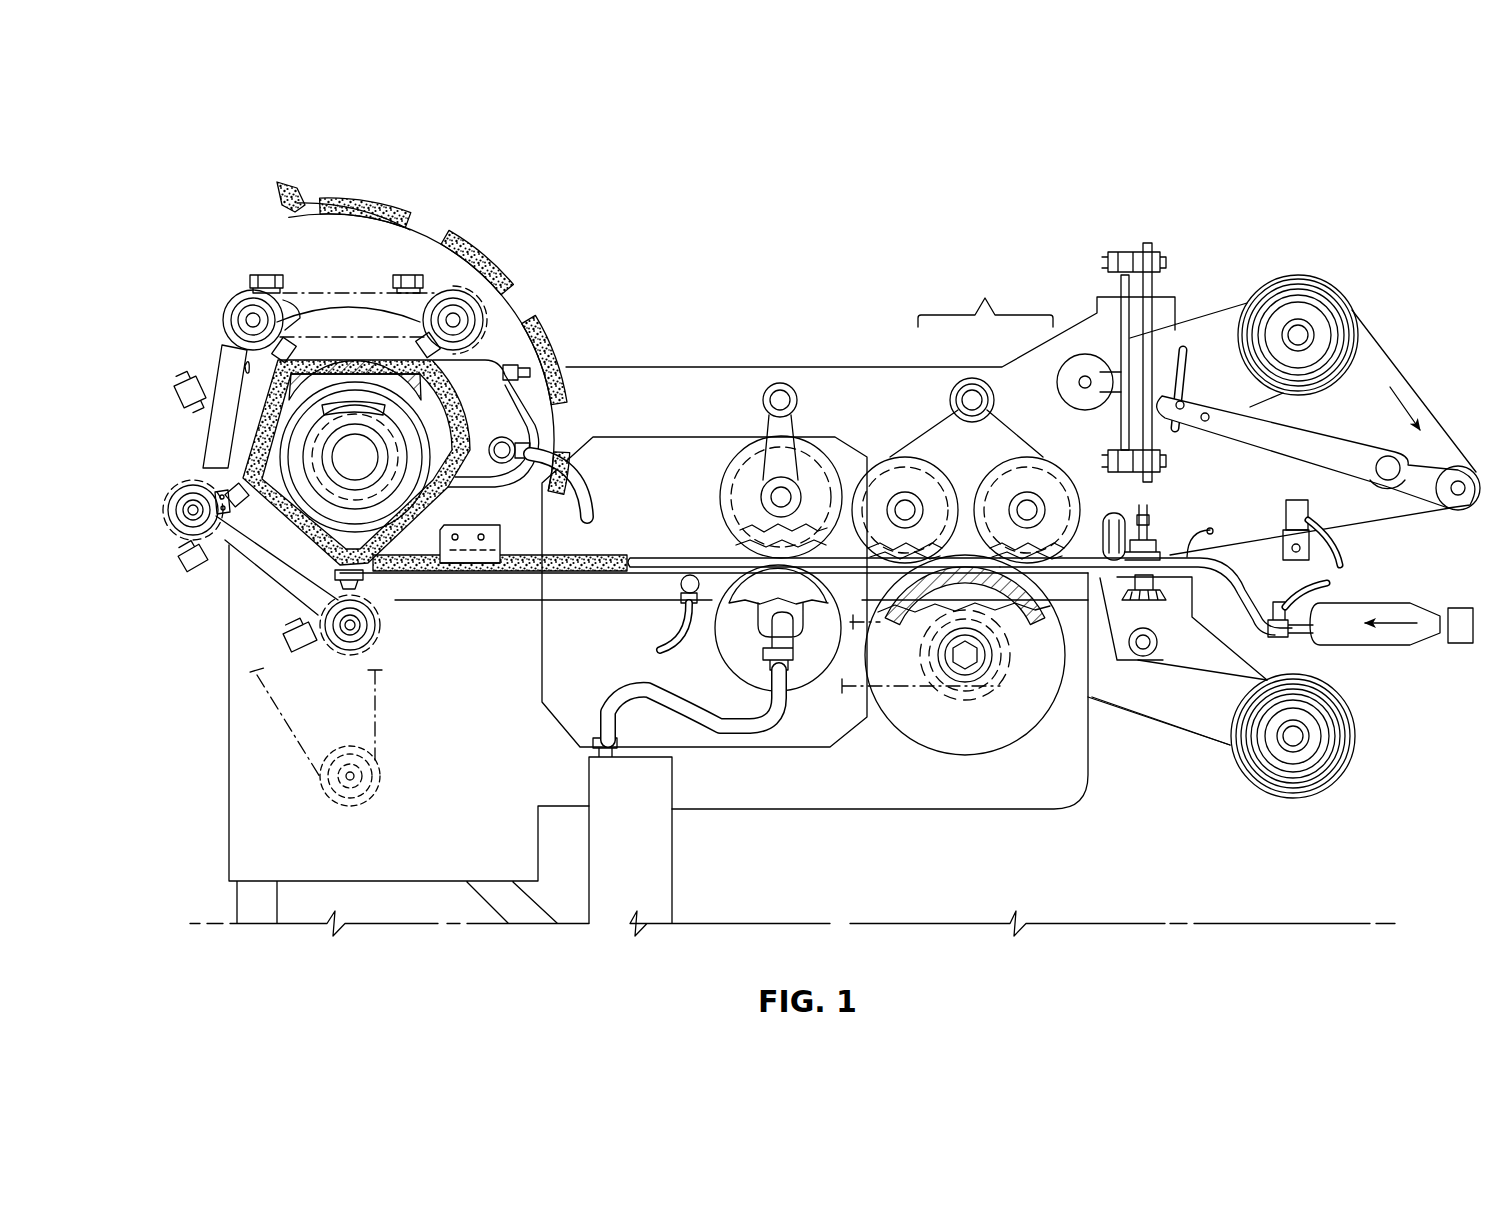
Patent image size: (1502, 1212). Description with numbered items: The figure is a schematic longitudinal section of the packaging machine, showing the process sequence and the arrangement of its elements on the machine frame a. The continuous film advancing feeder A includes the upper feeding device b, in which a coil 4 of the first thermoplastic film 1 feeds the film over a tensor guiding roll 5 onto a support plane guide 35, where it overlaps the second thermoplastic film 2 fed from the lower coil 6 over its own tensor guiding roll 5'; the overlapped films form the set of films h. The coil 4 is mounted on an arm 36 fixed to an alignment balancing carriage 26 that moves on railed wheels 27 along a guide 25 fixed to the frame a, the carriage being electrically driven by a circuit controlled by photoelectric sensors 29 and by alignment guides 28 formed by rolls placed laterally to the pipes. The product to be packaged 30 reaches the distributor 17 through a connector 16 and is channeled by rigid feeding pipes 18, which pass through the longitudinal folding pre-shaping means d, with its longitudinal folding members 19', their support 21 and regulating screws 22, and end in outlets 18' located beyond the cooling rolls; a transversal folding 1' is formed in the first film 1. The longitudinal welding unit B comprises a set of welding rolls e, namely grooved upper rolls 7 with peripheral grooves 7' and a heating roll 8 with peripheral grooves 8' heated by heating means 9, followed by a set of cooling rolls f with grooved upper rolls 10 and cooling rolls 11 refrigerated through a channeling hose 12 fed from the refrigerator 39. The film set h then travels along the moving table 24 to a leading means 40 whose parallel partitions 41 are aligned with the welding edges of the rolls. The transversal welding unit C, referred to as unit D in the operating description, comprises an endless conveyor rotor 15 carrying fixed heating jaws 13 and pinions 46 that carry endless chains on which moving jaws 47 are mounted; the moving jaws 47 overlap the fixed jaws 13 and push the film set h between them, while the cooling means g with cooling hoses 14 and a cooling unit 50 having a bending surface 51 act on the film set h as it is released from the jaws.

The first thermoplastic film 1 is at (1323, 432).
The transversal folding 1' is at (436, 348).
The second thermoplastic film 2 is at (1230, 682).
The coil 4 is at (1316, 276).
The tensor guiding roll 5 is at (1326, 430).
The tensor guiding roll 5' is at (1166, 645).
The lower coil 6 is at (1350, 789).
The grooved upper rolls 7 is at (964, 472).
The peripheral grooves 7' is at (966, 489).
The heating roll 8 is at (965, 675).
The peripheral grooves 8' is at (965, 624).
The heating means 9 is at (925, 620).
The grooved upper rolls 10 is at (760, 450).
The cooling rolls 11 is at (727, 648).
The channeling hose 12 is at (612, 702).
The fixed heating jaws 13 is at (400, 358).
The cooling hoses 14 is at (583, 487).
The endless conveyor rotor 15 is at (243, 486).
The connector 16 is at (1463, 637).
The distributor 17 is at (1372, 637).
The rigid feeding pipes 18 is at (987, 561).
The outlets 18' is at (806, 527).
The longitudinal folding members 19' is at (1234, 532).
The support 21 is at (1165, 540).
The regulating screws 22 is at (1140, 518).
The moving table 24 is at (553, 590).
The guide 25 is at (1123, 290).
The alignment balancing carriage 26 is at (1156, 278).
The railed moving wheels 27 is at (1125, 257).
The alignment guides 28 is at (1107, 530).
The photoelectric sensors 29 is at (1310, 504).
The product to be packaged 30 is at (452, 250).
The guide 35 is at (1100, 578).
The arm 36 is at (1233, 305).
The refrigerator 39 is at (658, 868).
The leading means 40 is at (497, 537).
The partitions 41 is at (447, 563).
The pinions 46 is at (237, 293).
The moving jaws 47 is at (265, 273).
The cooling unit 50 is at (503, 407).
The bending surface 51 is at (467, 437).
The machine frame a is at (250, 824).
The upper feeding device b is at (1372, 320).
The longitudinal folding pre-shaping means d is at (1166, 550).
The set of welding rolls e is at (898, 440).
The set of cooling rolls f is at (795, 697).
The means for cooling transversal welding unit g is at (537, 303).
The set of films h is at (489, 262).
The continuous film advancing feeder A is at (1395, 557).
The longitudinal welding unit B is at (985, 301).
The transversal welding unit C is at (1435, 655).
The transversal welding unit D is at (218, 296).